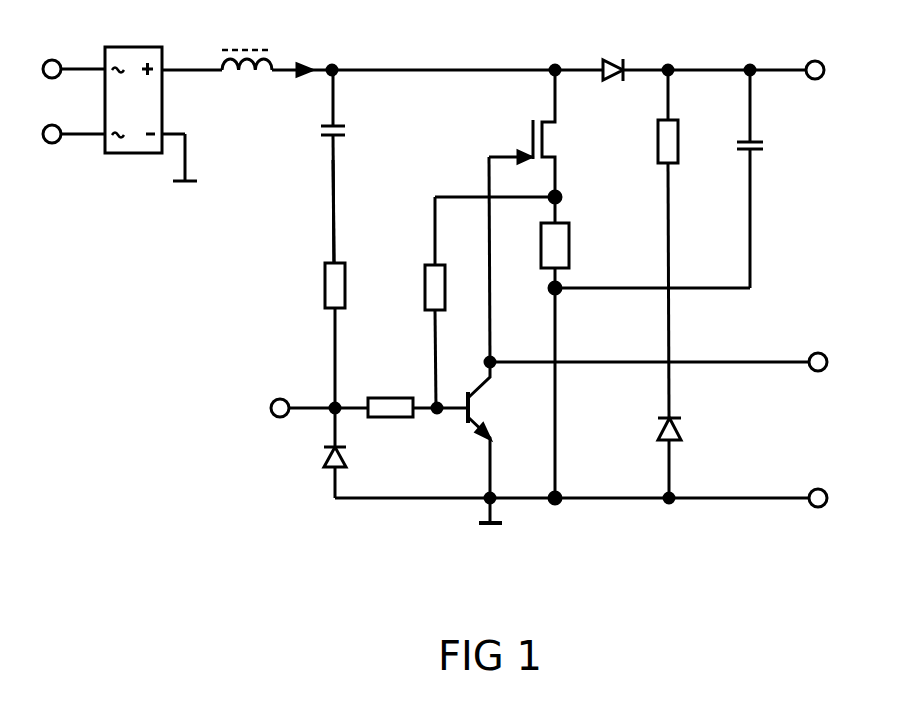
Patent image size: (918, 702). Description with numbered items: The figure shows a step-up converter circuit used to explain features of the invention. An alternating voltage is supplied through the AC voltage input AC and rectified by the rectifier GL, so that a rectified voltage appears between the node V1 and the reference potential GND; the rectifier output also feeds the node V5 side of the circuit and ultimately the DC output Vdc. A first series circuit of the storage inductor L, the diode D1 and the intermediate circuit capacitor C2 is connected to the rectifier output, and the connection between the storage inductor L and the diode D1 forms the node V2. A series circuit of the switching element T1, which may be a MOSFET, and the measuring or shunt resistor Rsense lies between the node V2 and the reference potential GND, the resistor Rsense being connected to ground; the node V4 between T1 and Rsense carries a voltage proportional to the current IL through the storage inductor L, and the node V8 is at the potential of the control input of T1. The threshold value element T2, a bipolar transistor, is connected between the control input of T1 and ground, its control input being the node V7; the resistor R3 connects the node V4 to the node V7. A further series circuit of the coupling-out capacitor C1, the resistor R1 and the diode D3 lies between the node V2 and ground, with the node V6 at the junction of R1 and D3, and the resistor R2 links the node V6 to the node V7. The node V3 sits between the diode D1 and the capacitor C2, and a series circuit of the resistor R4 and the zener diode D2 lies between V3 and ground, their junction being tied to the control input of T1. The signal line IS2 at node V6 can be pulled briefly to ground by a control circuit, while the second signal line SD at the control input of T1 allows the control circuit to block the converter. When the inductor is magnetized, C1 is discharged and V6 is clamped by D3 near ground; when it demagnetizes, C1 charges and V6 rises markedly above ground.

The AC voltage input AC is at (65, 101).
The rectifier GL is at (151, 98).
The node V1 is at (192, 53).
The storage inductor L is at (247, 42).
The current IL is at (302, 48).
The node V2 is at (443, 58).
The coupling-out capacitor C1 is at (355, 166).
The node voltage V5 is at (314, 211).
The resistor R1 is at (317, 335).
The node V6 is at (328, 390).
The signal line IS2 is at (255, 409).
The diode D3 is at (358, 453).
The resistor R2 is at (418, 390).
The node V7 is at (442, 430).
The resistor R3 is at (416, 302).
The threshold value element T2 is at (497, 442).
The node V8 is at (470, 267).
The second signal line SD is at (682, 366).
The switching element T1 is at (545, 133).
The node V4 is at (522, 201).
The resistor Rsense is at (645, 350).
The diode D1 is at (612, 55).
The resistor R4 is at (689, 241).
The diode D2 is at (695, 460).
The node V3 is at (717, 54).
The DC output terminal Vdc is at (817, 73).
The intermediate circuit capacitor C2 is at (773, 179).
The reference potential GND is at (616, 501).